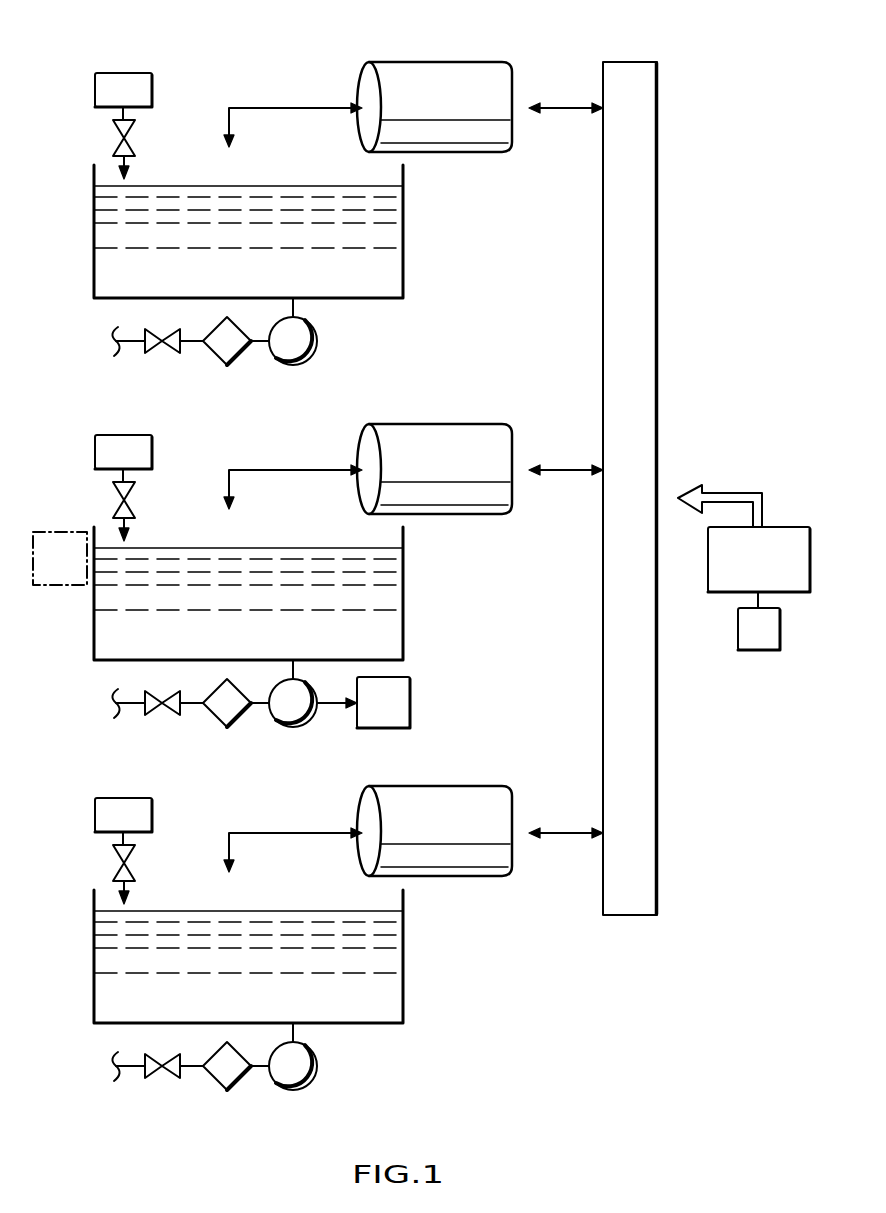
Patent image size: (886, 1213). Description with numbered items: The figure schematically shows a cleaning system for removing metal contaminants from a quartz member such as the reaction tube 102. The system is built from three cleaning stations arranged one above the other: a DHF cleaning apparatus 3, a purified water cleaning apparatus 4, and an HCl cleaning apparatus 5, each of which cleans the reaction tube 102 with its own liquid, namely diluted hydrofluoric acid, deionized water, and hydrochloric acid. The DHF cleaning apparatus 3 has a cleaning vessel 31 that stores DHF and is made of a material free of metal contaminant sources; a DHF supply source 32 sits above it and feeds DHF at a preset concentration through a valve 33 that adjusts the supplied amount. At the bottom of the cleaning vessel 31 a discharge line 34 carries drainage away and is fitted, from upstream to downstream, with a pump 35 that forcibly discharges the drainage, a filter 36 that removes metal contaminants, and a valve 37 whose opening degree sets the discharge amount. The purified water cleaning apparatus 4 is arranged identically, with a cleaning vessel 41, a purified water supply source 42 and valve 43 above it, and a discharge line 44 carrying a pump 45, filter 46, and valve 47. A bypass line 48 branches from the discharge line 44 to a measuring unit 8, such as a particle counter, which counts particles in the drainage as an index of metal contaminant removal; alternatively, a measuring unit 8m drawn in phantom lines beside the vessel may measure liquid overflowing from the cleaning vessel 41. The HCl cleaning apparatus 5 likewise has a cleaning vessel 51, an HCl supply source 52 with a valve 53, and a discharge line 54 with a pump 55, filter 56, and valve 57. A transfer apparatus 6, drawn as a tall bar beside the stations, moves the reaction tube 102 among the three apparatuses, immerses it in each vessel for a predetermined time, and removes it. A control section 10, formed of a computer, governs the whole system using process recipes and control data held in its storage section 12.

The DHF cleaning apparatus 3 is at (405, 226).
The cleaning vessel 31 is at (404, 270).
The DHF supply source 32 is at (152, 88).
The valve 33 is at (130, 142).
The discharge line 34 is at (295, 305).
The pump 35 is at (274, 357).
The filter 36 is at (216, 356).
The valve 37 is at (168, 353).
The purified water cleaning apparatus 4 is at (278, 600).
The cleaning vessel 41 is at (277, 593).
The purified water supply source 42 is at (152, 458).
The valve 43 is at (148, 511).
The discharge line 44 is at (323, 675).
The pump 45 is at (279, 720).
The filter 46 is at (215, 720).
The valve 47 is at (147, 725).
The bypass line 48 is at (333, 705).
The measuring unit 8 is at (410, 702).
The measuring unit 8m is at (44, 587).
The HCl cleaning apparatus 5 is at (278, 963).
The cleaning vessel 51 is at (277, 956).
The HCl supply source 52 is at (152, 821).
The valve 53 is at (148, 874).
The discharge line 54 is at (323, 1038).
The pump 55 is at (279, 1083).
The filter 56 is at (215, 1083).
The valve 57 is at (147, 1088).
The reaction tube 102 is at (477, 153).
The transfer apparatus 6 is at (630, 62).
The control section 10 is at (810, 558).
The storage section 12 is at (780, 630).